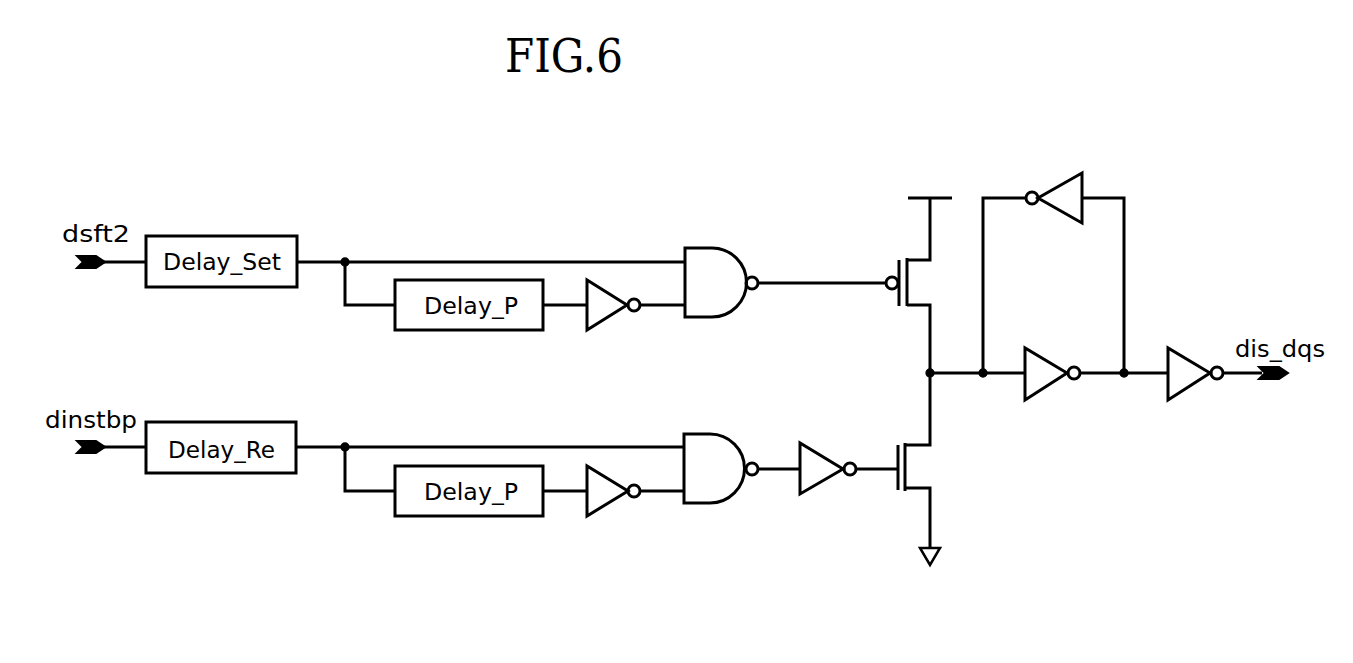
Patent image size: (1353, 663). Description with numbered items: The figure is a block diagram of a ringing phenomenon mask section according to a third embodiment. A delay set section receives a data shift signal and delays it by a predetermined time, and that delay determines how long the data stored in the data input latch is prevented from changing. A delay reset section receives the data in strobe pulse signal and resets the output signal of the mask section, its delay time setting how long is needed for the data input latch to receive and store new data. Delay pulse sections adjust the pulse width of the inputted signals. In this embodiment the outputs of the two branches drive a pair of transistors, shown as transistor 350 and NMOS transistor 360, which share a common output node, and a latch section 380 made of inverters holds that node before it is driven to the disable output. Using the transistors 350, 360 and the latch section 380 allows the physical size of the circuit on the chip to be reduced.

The PMOS transistor 350 is at (918, 258).
The NMOS transistor 360 is at (915, 490).
The latch section 380 is at (1111, 198).